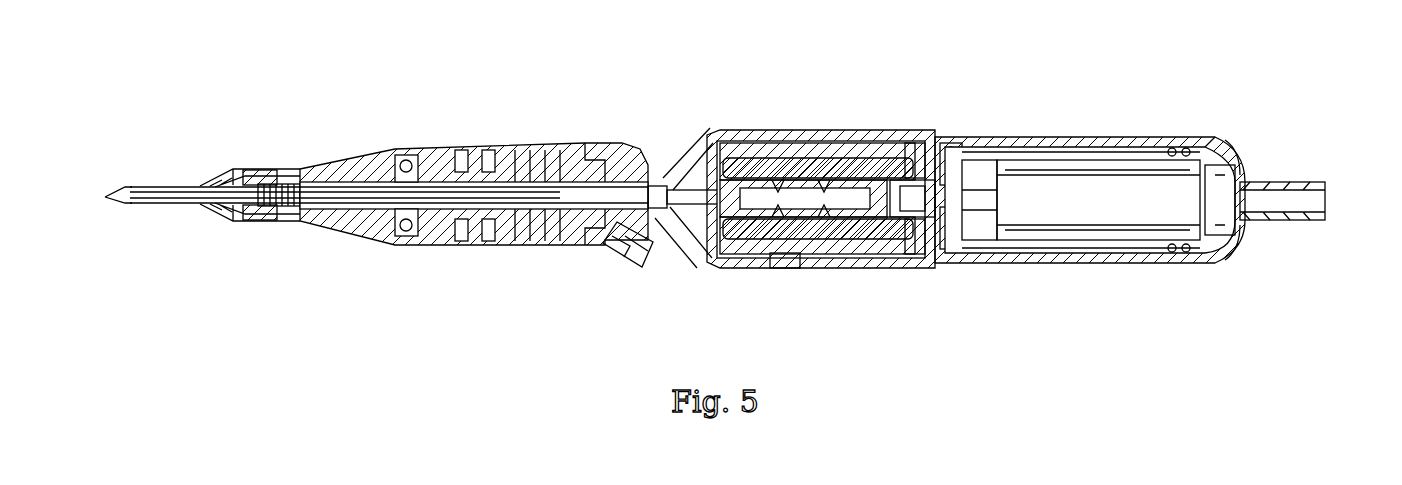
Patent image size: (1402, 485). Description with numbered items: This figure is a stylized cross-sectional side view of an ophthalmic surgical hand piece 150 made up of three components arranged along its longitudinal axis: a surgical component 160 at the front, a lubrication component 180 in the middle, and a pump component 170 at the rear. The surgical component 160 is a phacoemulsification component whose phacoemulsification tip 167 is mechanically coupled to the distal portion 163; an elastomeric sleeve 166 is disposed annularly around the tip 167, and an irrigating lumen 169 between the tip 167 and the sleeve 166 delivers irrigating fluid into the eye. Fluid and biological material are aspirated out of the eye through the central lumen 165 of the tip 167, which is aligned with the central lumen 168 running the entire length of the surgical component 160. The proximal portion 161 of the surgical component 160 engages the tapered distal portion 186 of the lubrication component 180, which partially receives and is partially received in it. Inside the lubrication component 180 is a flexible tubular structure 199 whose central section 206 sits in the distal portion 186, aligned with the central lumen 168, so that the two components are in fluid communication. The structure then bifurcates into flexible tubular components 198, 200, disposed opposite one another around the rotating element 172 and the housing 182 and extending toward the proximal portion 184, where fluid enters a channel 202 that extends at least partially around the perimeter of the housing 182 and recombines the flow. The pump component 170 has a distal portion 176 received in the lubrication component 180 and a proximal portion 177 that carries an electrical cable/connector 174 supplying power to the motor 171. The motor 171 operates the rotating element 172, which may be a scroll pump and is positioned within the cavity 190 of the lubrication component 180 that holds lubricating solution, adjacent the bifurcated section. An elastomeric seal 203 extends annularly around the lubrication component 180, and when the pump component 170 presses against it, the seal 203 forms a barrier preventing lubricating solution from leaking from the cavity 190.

The surgical hand piece 150 is at (305, 88).
The surgical component 160 is at (474, 220).
The proximal portion of surgical component 161 is at (628, 268).
The distal portion of surgical component 163 is at (286, 222).
The central lumen of phacoemulsification tip 165 is at (133, 206).
The elastomeric sleeve 166 is at (208, 176).
The phacoemulsification tip 167 is at (112, 191).
The central lumen of surgical component 168 is at (432, 173).
The irrigating lumen 169 is at (205, 203).
The pump component 170 is at (1165, 248).
The motor 171 is at (1082, 208).
The rotating element 172 is at (826, 210).
The electrical cable/connector 174 is at (1325, 200).
The distal portion of pump component 176 is at (816, 143).
The proximal portion of pump component 177 is at (1250, 246).
The lubrication component 180 is at (839, 223).
The housing 182 is at (865, 138).
The proximal portion of lubrication component 184 is at (928, 268).
The distal portion of lubrication component 186 is at (688, 150).
The cavity 190 is at (850, 158).
The flexible tubular component 198 is at (765, 150).
The flexible tubular structure 199 is at (712, 150).
The flexible tubular component 200 is at (782, 266).
The channel 202 is at (915, 143).
The seal 203 is at (944, 143).
The central section 206 is at (684, 201).